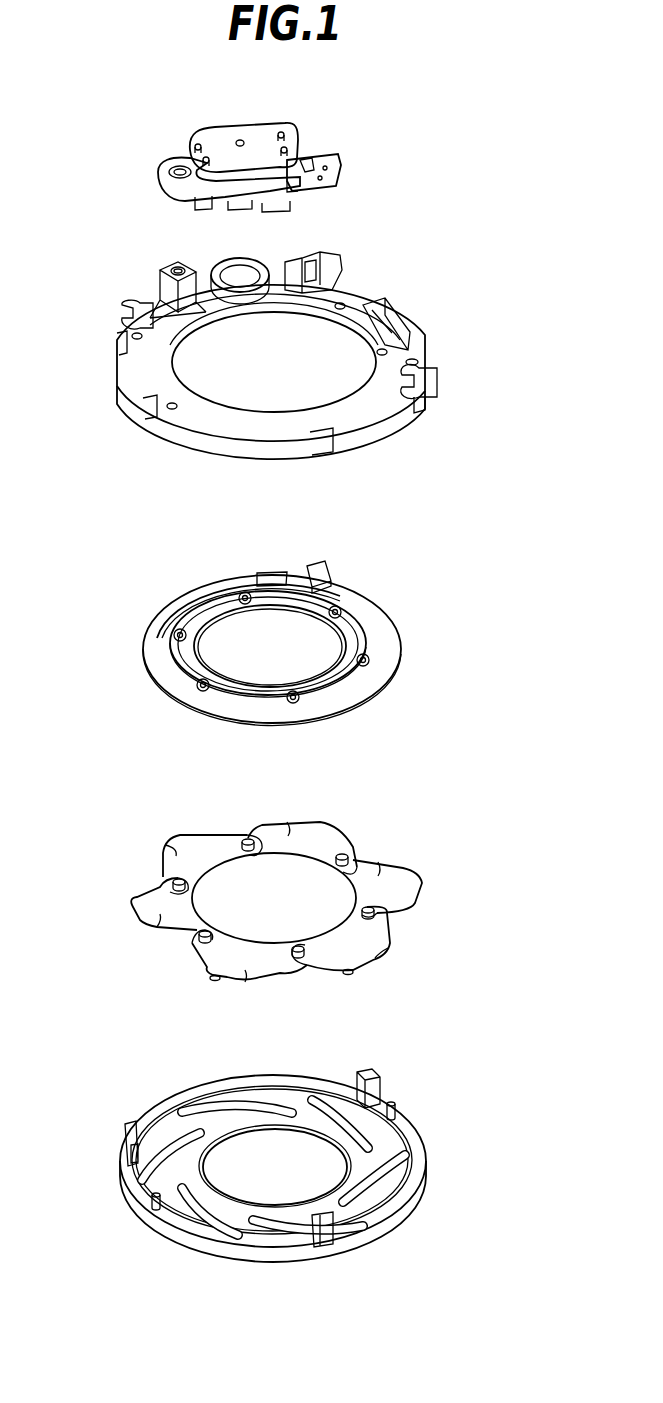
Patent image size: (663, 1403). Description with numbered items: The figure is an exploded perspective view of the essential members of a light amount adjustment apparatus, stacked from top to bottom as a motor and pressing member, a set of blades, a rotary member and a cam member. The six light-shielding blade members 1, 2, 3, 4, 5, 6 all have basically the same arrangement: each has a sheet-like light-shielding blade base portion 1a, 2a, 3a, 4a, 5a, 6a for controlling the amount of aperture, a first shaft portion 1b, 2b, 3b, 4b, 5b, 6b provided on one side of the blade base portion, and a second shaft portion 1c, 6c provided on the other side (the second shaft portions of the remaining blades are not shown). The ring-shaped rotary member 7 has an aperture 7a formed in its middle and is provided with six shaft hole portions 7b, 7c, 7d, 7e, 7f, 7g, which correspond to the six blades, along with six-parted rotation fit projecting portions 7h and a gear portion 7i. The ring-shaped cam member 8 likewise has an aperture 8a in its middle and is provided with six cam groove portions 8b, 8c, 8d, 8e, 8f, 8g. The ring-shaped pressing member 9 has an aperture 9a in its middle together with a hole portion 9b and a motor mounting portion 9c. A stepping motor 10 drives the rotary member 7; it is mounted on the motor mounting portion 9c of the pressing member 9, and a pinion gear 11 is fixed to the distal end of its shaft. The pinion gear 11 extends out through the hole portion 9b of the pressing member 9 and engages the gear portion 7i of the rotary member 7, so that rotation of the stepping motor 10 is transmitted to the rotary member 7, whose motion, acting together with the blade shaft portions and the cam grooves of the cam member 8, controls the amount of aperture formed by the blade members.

The light-shielding blade member 1 is at (367, 970).
The blade base portion 1a is at (380, 955).
The first shaft portion 1b is at (303, 962).
The second shaft portion 1c is at (348, 976).
The light-shielding blade member 2 is at (410, 863).
The blade base portion 2a is at (378, 862).
The first shaft portion 2b is at (388, 906).
The light-shielding blade member 3 is at (302, 845).
The blade base portion 3a is at (288, 832).
The first shaft portion 3b is at (340, 866).
The light-shielding blade member 4 is at (200, 845).
The blade base portion 4a is at (173, 850).
The first shaft portion 4b is at (252, 852).
The light-shielding blade member 5 is at (170, 917).
The blade base portion 5a is at (158, 928).
The first shaft portion 5b is at (190, 889).
The light-shielding blade member 6 is at (221, 988).
The blade base portion 6a is at (245, 974).
The first shaft portion 6b is at (198, 944).
The second shaft portion 6c is at (215, 980).
The rotary member 7 is at (286, 645).
The aperture 7a is at (370, 658).
The shaft hole portion 7b is at (295, 705).
The shaft hole portion 7c is at (352, 612).
The shaft hole portion 7d is at (340, 605).
The shaft hole portion 7e is at (248, 605).
The shaft hole portion 7f is at (170, 630).
The shaft hole portion 7g is at (203, 692).
The rotation fit projecting portion 7h is at (278, 578).
The gear portion 7i is at (236, 575).
The cam member 8 is at (284, 1187).
The aperture 8a is at (268, 1204).
The cam groove portion 8b is at (352, 1238).
The cam groove portion 8c is at (418, 1152).
The cam groove portion 8d is at (333, 1114).
The cam groove portion 8e is at (235, 1112).
The cam groove portion 8f is at (125, 1153).
The cam groove portion 8g is at (205, 1215).
The pressing member 9 is at (300, 335).
The aperture 9a is at (226, 400).
The hole portion 9b is at (255, 262).
The motor mounting portion 9c is at (305, 258).
The stepping motor 10 is at (262, 164).
The pinion gear 11 is at (255, 206).